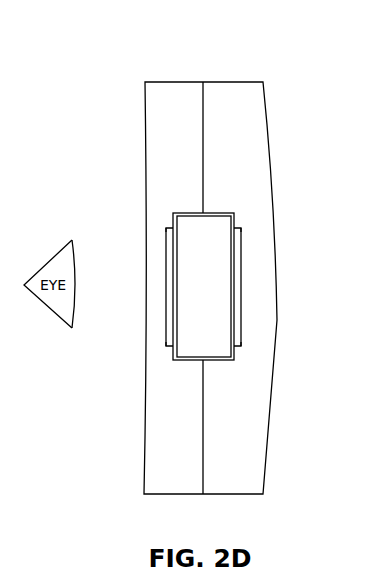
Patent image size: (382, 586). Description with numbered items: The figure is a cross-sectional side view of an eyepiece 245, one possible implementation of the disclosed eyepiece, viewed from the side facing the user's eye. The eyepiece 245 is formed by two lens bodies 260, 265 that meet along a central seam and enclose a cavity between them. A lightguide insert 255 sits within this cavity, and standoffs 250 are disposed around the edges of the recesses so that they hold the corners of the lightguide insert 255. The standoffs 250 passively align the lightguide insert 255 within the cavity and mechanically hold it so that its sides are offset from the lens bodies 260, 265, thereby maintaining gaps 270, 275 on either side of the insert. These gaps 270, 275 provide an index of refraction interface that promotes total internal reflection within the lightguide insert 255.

The eyepiece 245 is at (166, 259).
The standoffs 250 is at (167, 220).
The lightguide insert 255 is at (190, 294).
The lens body 260 is at (180, 152).
The lens body 265 is at (212, 152).
The gap 270 is at (170, 285).
The gap 275 is at (235, 298).